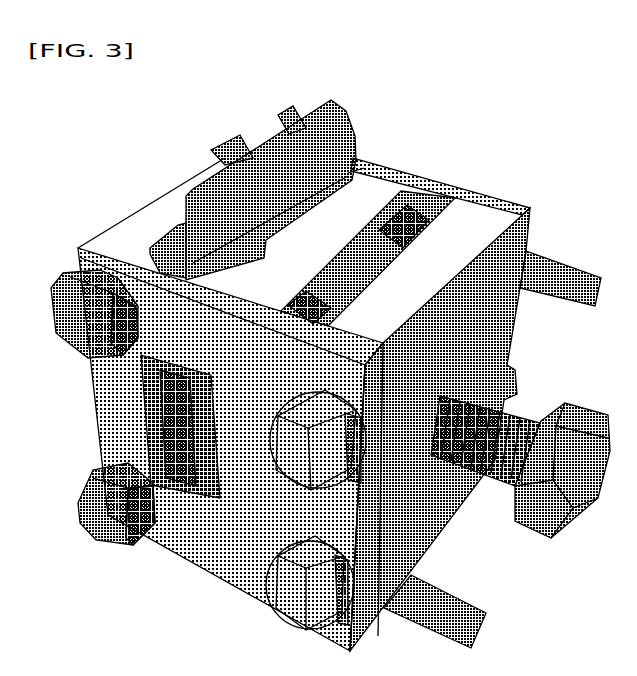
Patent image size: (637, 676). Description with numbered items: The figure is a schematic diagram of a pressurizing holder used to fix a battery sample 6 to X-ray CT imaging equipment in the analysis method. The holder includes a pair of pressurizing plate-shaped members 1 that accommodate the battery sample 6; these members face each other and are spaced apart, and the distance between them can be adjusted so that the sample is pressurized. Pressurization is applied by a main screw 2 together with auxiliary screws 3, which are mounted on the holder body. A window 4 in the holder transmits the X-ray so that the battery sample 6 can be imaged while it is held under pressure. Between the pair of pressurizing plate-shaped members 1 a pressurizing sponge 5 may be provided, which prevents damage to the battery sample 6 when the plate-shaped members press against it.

The pressurizing plate-shaped members 1 is at (304, 242).
The main screw 2 is at (520, 467).
The auxiliary screws 3 is at (492, 449).
The window 4 is at (145, 408).
The pressurizing sponge 5 is at (351, 161).
The battery sample 6 is at (271, 190).